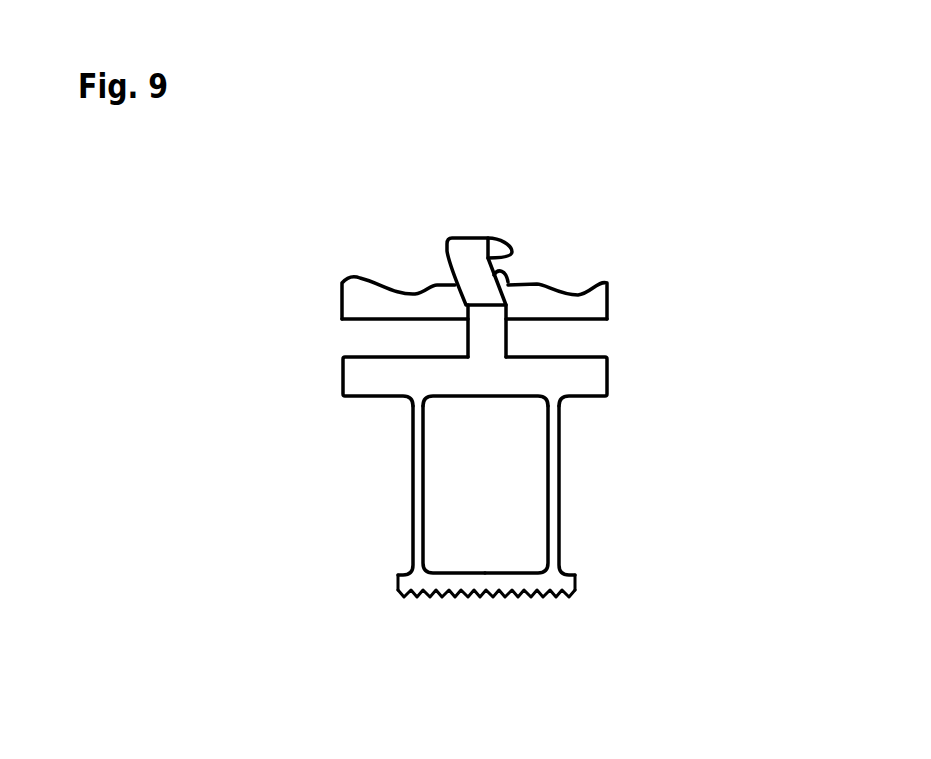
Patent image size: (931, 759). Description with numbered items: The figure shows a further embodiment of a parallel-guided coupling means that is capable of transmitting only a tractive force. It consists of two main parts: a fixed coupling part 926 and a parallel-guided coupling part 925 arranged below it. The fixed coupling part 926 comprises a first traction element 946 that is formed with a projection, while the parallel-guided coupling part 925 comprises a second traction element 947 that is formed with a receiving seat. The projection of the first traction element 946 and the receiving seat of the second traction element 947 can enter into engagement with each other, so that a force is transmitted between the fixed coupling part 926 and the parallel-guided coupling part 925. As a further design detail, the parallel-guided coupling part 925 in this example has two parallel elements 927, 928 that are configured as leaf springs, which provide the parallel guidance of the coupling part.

The parallel-guided coupling part 925 is at (623, 383).
The fixed coupling part 926 is at (626, 296).
The parallel element 927 is at (418, 483).
The parallel element 928 is at (550, 468).
The first traction element 946 is at (506, 277).
The second traction element 947 is at (468, 258).